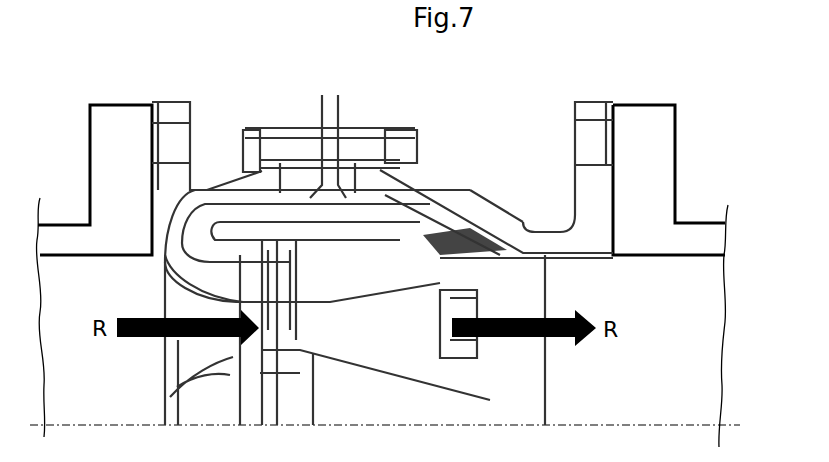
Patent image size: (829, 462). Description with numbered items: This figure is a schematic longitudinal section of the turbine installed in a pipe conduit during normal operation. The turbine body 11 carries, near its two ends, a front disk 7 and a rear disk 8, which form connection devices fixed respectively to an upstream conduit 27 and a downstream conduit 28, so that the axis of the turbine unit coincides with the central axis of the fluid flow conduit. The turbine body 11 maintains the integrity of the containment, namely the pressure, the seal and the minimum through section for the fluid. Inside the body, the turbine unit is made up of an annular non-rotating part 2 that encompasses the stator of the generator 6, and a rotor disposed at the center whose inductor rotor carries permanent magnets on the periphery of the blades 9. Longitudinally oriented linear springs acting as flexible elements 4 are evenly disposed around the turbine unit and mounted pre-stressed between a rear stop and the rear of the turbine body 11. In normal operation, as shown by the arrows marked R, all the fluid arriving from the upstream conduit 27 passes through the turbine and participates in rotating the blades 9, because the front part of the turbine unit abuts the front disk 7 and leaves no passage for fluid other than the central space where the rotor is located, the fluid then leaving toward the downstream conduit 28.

The non-rotating part 2 is at (210, 248).
The flexible element 4 is at (452, 244).
The generator 6 is at (250, 248).
The front disk 7 is at (180, 110).
The rear disk 8 is at (582, 118).
The blades 9 is at (288, 333).
The turbine body 11 is at (468, 208).
The upstream conduit 27 is at (103, 156).
The downstream conduit 28 is at (660, 153).